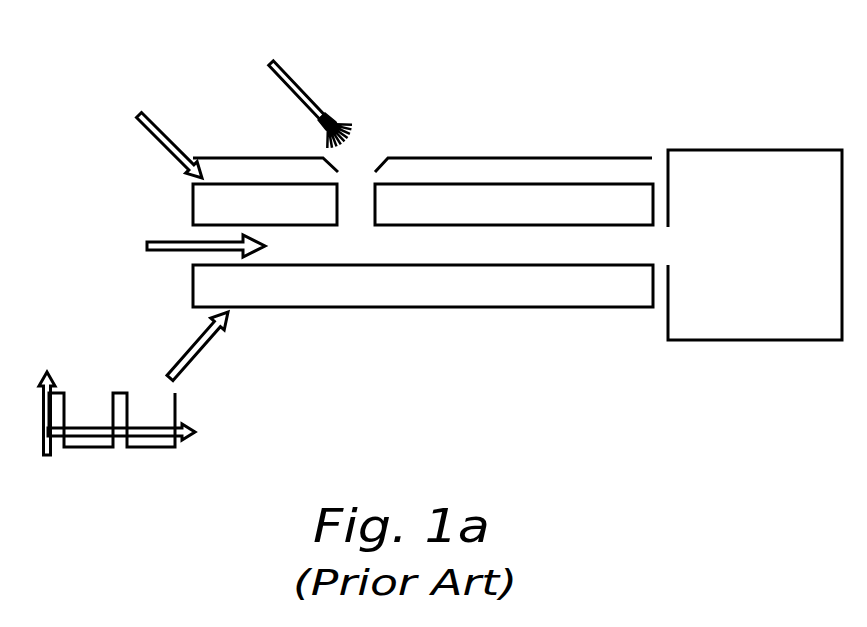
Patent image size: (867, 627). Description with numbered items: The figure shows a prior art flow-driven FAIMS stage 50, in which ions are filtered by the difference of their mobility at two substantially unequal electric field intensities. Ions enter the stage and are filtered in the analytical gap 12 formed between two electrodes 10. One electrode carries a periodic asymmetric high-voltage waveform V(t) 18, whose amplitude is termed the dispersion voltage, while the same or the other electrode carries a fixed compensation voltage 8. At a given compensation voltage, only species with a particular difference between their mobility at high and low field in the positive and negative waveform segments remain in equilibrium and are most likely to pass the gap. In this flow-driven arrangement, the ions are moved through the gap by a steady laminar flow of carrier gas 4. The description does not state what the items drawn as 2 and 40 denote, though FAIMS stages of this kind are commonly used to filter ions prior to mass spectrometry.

The brush / sample applicator 2 is at (272, 82).
The carrier gas 4 is at (158, 240).
The compensation voltage 8 is at (145, 128).
The electrodes 10 is at (283, 218).
The analytical gap 12 is at (610, 258).
The periodic asymmetric high-voltage waveform 18 is at (118, 392).
The mass spectrometer (MS) 40 is at (773, 299).
The flow-driven FAIMS stage 50 is at (617, 82).